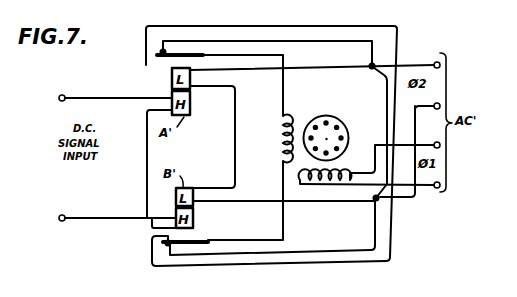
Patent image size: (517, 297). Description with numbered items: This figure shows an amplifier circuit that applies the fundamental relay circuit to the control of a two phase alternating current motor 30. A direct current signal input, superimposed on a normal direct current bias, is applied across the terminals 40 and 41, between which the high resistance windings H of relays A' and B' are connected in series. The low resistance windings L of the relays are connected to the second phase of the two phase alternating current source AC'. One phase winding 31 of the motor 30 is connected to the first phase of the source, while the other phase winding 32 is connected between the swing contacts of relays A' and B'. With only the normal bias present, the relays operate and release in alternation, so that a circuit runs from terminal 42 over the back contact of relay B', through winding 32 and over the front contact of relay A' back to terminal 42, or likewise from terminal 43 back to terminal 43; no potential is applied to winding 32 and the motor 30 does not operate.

The two phase alternating current motor 30 is at (338, 100).
The phase winding 31 is at (330, 183).
The phase winding 32 is at (278, 141).
The terminal 40 is at (64, 95).
The terminal 41 is at (64, 215).
The terminal 42 is at (440, 104).
The terminal 43 is at (440, 63).